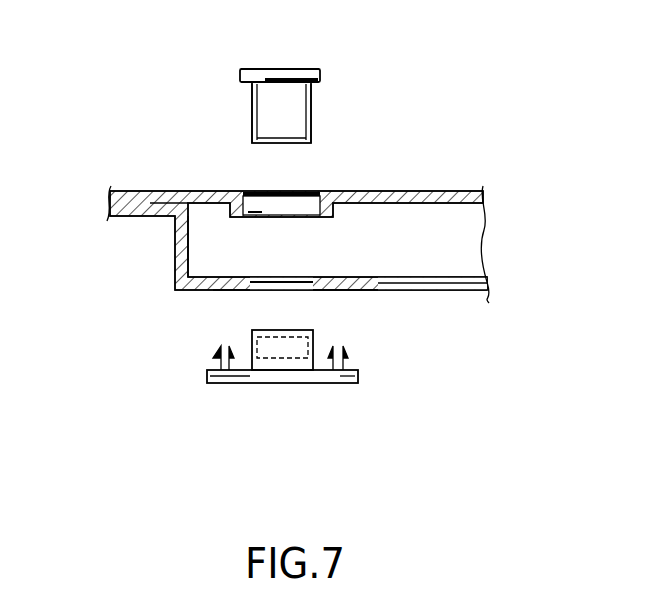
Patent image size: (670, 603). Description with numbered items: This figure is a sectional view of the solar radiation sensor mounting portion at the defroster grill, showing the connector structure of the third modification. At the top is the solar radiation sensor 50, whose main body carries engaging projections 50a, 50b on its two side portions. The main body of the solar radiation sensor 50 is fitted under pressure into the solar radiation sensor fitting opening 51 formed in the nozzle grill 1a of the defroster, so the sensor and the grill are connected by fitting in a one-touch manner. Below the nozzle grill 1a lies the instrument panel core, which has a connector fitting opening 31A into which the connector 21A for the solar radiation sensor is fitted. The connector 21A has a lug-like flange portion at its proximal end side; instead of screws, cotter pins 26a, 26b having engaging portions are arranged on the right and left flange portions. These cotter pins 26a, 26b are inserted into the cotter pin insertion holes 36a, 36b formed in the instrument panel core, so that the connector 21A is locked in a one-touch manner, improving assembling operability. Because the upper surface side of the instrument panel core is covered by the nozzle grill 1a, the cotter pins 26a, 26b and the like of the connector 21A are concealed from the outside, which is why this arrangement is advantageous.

The nozzle grill 1a is at (467, 190).
The solar radiation sensor 50 is at (300, 80).
The engaging projection 50a is at (252, 100).
The engaging projection 50b is at (311, 100).
The solar radiation sensor fitting opening 51 is at (305, 203).
The connector fitting opening 31A is at (313, 278).
The connector 21A is at (288, 363).
The cotter pin 26a is at (220, 353).
The cotter pin 26b is at (353, 355).
The cotter pin insertion hole 36a is at (213, 300).
The cotter pin insertion hole 36b is at (357, 310).